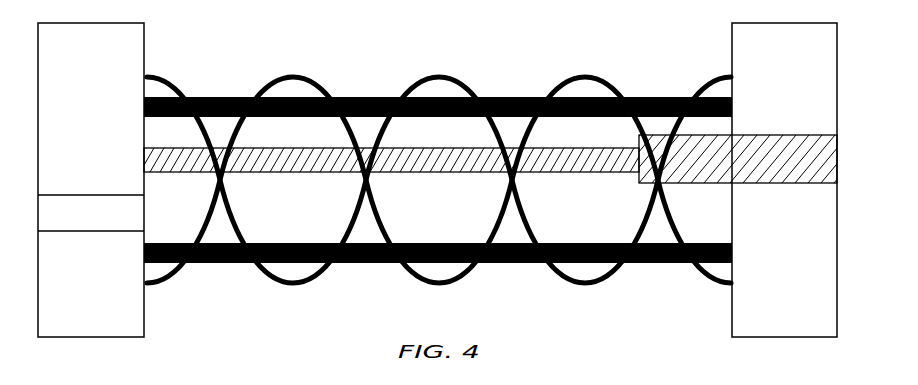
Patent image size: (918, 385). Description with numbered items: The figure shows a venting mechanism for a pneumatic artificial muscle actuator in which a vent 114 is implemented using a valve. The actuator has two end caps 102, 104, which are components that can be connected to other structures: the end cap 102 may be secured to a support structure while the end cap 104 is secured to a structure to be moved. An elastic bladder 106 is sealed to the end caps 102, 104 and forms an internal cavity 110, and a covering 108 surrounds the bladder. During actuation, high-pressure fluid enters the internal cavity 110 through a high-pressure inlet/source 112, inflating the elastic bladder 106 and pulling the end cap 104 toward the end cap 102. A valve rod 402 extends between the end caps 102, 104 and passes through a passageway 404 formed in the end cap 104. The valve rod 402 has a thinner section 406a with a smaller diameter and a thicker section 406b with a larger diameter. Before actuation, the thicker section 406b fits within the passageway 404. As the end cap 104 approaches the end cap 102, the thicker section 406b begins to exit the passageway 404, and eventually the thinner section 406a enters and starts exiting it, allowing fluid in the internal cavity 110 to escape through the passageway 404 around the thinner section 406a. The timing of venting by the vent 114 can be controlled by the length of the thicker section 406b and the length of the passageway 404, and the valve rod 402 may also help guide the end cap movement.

The end cap 102 is at (153, 325).
The end cap 104 is at (723, 323).
The elastic bladder 106 is at (215, 86).
The covering 108 is at (438, 69).
The internal cavity 110 is at (302, 221).
The high-pressure inlet/source 112 is at (58, 188).
The vent 114 is at (755, 119).
The valve rod 402 is at (502, 185).
The passageway 404 is at (757, 195).
The thinner section 406a is at (453, 181).
The thicker section 406b is at (631, 193).